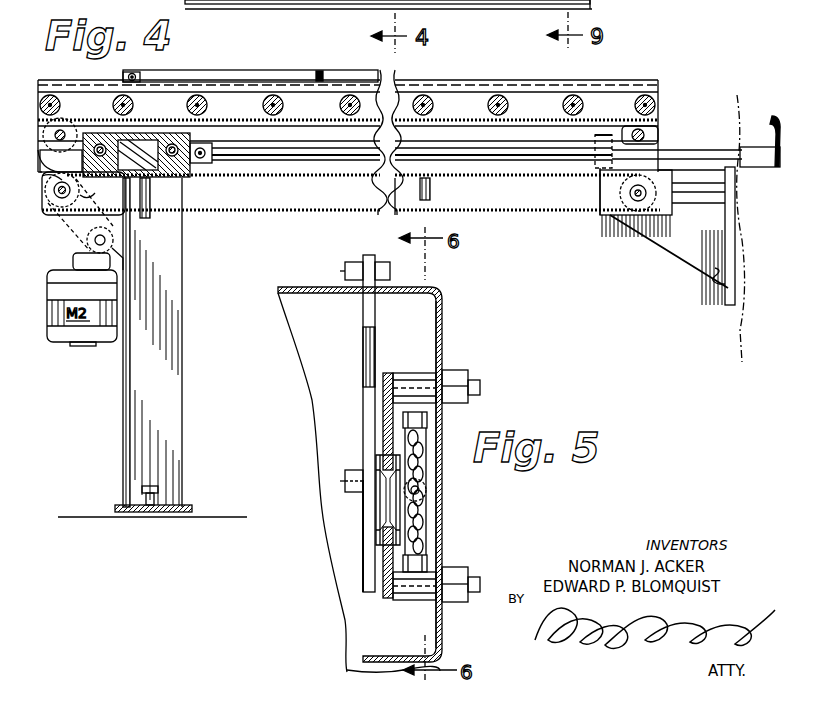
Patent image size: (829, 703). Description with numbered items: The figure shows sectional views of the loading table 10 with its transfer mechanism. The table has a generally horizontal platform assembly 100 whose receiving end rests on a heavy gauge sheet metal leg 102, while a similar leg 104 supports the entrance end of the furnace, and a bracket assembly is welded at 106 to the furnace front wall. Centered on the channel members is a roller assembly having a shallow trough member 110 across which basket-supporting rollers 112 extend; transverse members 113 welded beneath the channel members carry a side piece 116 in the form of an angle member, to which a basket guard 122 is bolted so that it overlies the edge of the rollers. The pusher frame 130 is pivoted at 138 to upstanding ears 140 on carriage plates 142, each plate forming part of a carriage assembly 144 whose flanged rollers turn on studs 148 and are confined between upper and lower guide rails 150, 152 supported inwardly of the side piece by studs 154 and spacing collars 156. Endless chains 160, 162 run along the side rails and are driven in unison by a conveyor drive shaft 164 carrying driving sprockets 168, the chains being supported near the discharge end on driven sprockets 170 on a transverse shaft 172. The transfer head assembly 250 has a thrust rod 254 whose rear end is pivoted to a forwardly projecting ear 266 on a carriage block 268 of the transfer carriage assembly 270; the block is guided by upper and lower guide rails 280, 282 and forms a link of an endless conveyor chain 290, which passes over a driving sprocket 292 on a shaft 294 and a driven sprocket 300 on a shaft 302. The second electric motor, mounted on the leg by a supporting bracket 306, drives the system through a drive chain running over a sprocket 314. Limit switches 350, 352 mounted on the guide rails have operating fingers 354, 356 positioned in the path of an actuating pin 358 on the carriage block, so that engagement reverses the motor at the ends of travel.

In FIG. 4, the loading table 10 is at (270, 64).
In FIG. 4, the platform assembly 100 is at (520, 102).
In FIG. 4, the leg 102 is at (168, 372).
In FIG. 4, the leg 104 is at (672, 254).
In FIG. 4, the weld 106 is at (716, 283).
In FIG. 4, the trough member 110 is at (407, 117).
In FIG. 4, the basket-supporting rollers 112 is at (273, 100).
In FIG. 4, the transverse members 113 is at (146, 214).
In FIG. 5, the side piece 116 is at (441, 546).
In FIG. 5, the basket guard 122 is at (444, 291).
In FIG. 4, the pusher frame 130 is at (342, 72).
In FIG. 4, the pivot 138 is at (136, 74).
In FIG. 5, the pivot 138 is at (346, 269).
In FIG. 4, the upstanding ear 140 is at (196, 83).
In FIG. 5, the upstanding ear 140 is at (364, 343).
In FIG. 5, the carriage plate 142 is at (363, 546).
In FIG. 5, the carriage assembly 144 is at (341, 481).
In FIG. 5, the stud 148 is at (413, 491).
In FIG. 5, the upper guide rail 150 is at (389, 372).
In FIG. 5, the lower guide rail 152 is at (388, 600).
In FIG. 5, the stud 154 is at (470, 382).
In FIG. 5, the spacing collar 156 is at (423, 372).
In FIG. 4, the endless chain 160 is at (44, 149).
In FIG. 5, the endless chain 162 is at (428, 425).
In FIG. 4, the conveyor drive shaft 164 is at (50, 166).
In FIG. 4, the driving sprocket 168 is at (53, 135).
In FIG. 5, the driving sprocket 168 is at (421, 509).
In FIG. 4, the driven sprocket 170 is at (646, 140).
In FIG. 5, the driven sprocket 170 is at (421, 455).
In FIG. 4, the transverse shaft 172 is at (643, 131).
In FIG. 4, the transfer head assembly 250 is at (765, 168).
In FIG. 4, the thrust rod 254 is at (716, 146).
In FIG. 4, the ear 266 is at (212, 166).
In FIG. 4, the carriage block 268 is at (205, 170).
In FIG. 4, the transfer carriage assembly 270 is at (196, 137).
In FIG. 4, the upper guide rail 280 is at (521, 130).
In FIG. 4, the lower guide rail 282 is at (515, 195).
In FIG. 4, the endless conveyor chain 290 is at (252, 216).
In FIG. 4, the driving sprocket 292 is at (46, 214).
In FIG. 4, the shaft 294 is at (52, 194).
In FIG. 4, the driven sprocket 300 is at (632, 212).
In FIG. 4, the shaft 302 is at (616, 214).
In FIG. 4, the supporting bracket 306 is at (113, 252).
In FIG. 4, the sprocket 314 is at (96, 249).
In FIG. 4, the limit switch 350 is at (128, 145).
In FIG. 4, the limit switch 352 is at (603, 134).
In FIG. 4, the operating finger 354 is at (78, 183).
In FIG. 4, the operating finger 356 is at (593, 150).
In FIG. 4, the actuating pin 358 is at (151, 134).